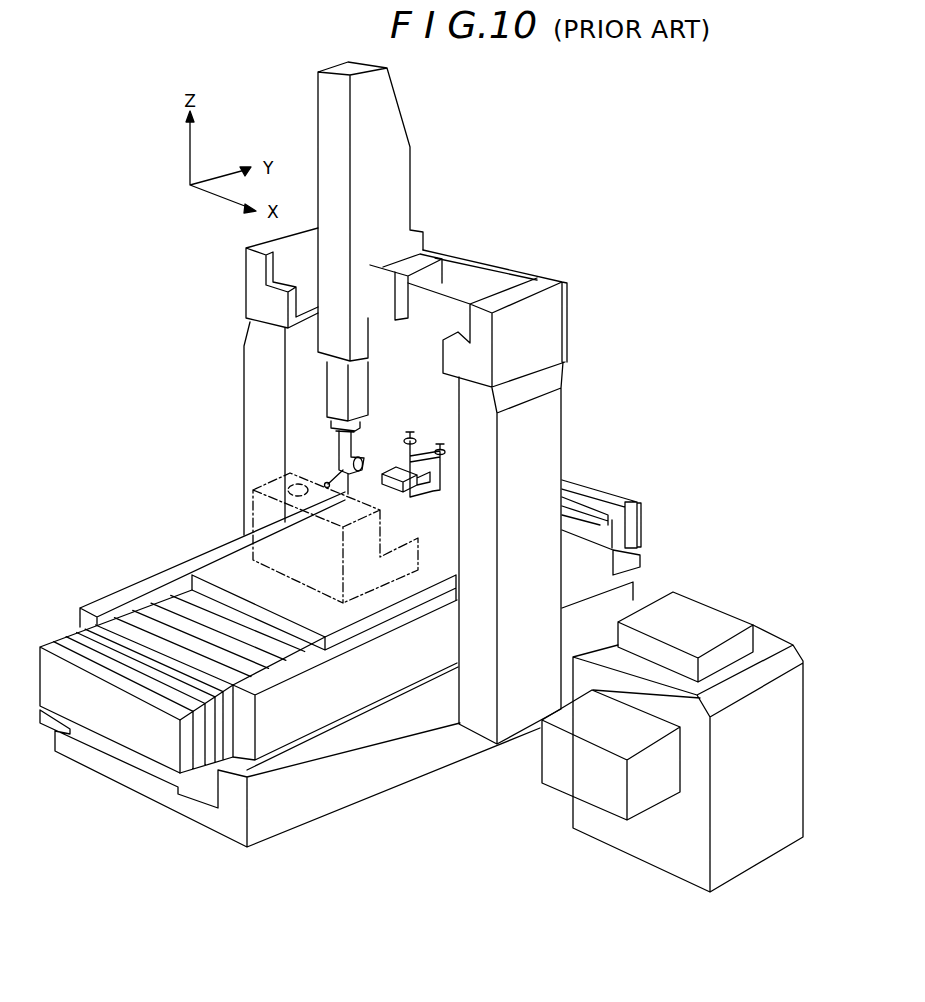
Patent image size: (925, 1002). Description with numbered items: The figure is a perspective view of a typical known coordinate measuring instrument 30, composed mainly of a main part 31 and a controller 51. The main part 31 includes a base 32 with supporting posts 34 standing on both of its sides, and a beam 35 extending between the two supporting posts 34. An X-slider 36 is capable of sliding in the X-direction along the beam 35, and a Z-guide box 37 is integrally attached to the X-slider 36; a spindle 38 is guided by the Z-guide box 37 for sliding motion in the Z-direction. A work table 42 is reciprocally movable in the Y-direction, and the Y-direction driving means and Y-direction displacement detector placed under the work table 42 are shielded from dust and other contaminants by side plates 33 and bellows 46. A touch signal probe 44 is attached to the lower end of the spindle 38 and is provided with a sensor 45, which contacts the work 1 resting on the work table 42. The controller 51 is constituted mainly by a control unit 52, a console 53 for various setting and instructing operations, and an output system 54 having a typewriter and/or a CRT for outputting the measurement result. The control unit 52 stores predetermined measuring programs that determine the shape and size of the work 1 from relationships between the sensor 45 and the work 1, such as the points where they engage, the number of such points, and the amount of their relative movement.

The work 1 is at (252, 490).
The coordinate measuring instrument 30 is at (385, 913).
The main part 31 is at (296, 848).
The base 32 is at (340, 768).
The side plates 33 is at (138, 591).
The supporting posts 34 is at (258, 412).
The beam 35 is at (470, 290).
The X-slider 36 is at (428, 258).
The Z-guide box 37 is at (400, 174).
The spindle 38 is at (334, 394).
The work table 42 is at (228, 578).
The touch signal probe 44 is at (440, 445).
The sensor 45 is at (340, 470).
The bellows 46 is at (100, 645).
The controller 51 is at (650, 730).
The control unit 52 is at (593, 820).
The console 53 is at (553, 760).
The output system 54 is at (687, 607).